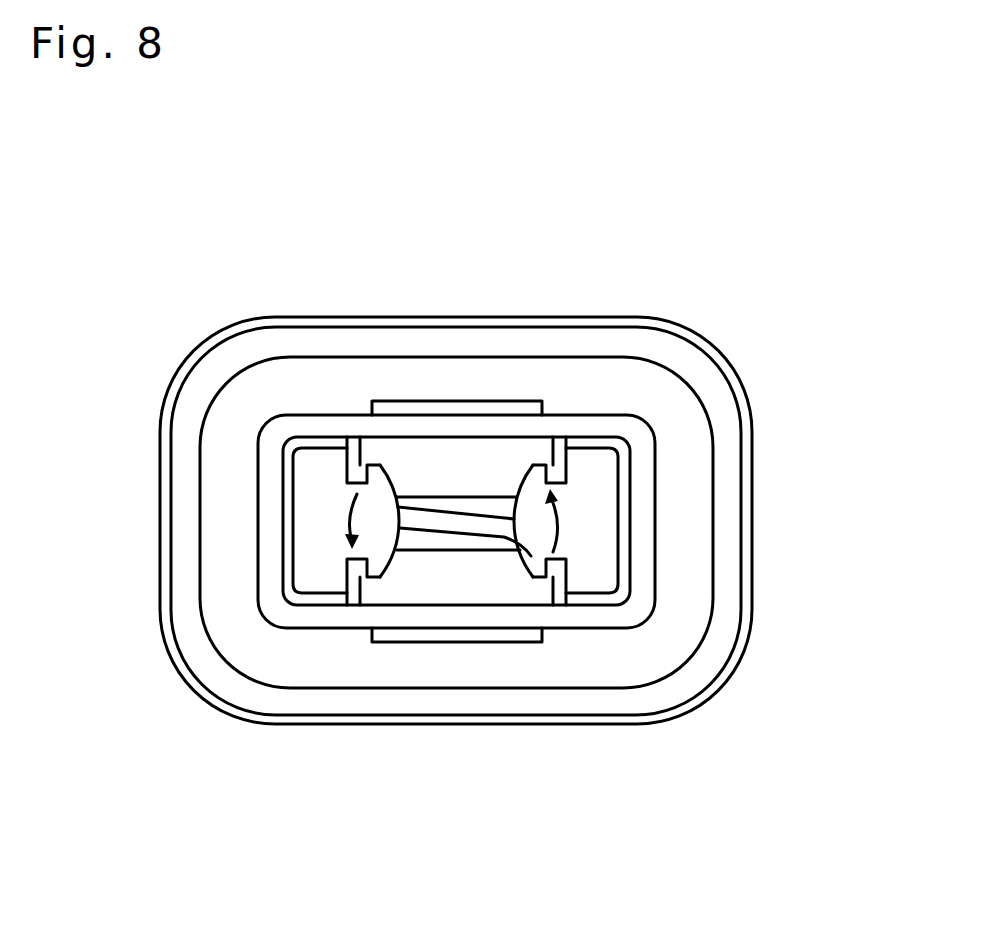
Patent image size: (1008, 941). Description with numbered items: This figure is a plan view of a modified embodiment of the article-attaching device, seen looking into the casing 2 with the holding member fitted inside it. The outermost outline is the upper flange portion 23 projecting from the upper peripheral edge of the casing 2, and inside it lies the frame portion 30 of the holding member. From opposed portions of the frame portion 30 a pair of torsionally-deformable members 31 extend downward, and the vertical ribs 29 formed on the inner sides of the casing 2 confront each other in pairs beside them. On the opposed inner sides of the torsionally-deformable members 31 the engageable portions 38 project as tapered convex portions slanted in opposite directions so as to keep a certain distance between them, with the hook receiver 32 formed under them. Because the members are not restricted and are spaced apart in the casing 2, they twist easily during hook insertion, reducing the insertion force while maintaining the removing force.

The casing 2 is at (196, 326).
The upper flange portion 23 is at (688, 520).
The frame portion 30 is at (641, 428).
The vertical ribs 29 is at (567, 472).
The torsionally-deformable members 31 is at (418, 468).
The engageable portions 38 is at (482, 503).
The hook receiver 32 is at (533, 543).